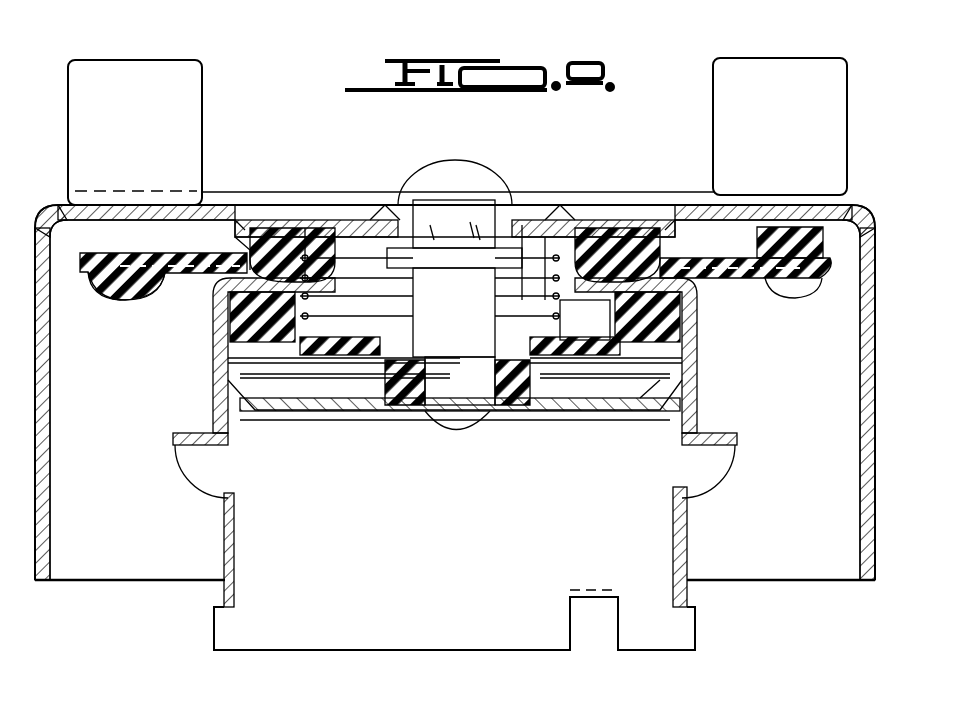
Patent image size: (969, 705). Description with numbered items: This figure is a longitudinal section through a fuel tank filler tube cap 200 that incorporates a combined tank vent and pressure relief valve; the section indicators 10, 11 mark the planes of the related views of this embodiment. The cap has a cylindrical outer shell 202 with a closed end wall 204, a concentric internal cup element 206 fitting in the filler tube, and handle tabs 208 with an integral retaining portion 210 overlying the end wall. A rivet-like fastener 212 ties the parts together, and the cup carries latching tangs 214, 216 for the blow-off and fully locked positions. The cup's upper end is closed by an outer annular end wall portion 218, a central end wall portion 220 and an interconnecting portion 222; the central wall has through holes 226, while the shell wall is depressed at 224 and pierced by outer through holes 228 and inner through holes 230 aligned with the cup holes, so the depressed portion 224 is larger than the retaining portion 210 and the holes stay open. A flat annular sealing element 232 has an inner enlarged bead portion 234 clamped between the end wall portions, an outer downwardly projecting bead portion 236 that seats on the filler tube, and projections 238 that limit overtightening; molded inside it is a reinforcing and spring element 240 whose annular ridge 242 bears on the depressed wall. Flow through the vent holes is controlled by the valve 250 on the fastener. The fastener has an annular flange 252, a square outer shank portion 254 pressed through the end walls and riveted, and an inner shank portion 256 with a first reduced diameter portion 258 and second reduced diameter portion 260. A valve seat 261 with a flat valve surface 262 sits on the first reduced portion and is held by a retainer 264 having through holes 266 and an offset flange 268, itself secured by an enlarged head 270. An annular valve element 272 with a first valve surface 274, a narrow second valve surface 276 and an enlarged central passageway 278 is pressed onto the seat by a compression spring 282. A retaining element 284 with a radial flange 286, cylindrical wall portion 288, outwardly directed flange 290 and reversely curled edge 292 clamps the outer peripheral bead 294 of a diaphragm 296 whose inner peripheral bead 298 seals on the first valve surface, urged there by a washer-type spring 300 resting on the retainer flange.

The fuel tank filler tube cap 200 is at (590, 190).
The outer shroud or shell 202 is at (122, 580).
The closed end wall 204 is at (788, 210).
The internal cup element 206 is at (312, 650).
The handle tabs 208 is at (100, 141).
The retaining portion 210 is at (343, 203).
The rivet-like fastener 212 is at (430, 312).
The latching tang 214 is at (603, 597).
The latching tang 216 is at (185, 462).
The outer annular end wall portion 218 is at (705, 232).
The central end wall portion 220 is at (527, 255).
The interconnecting portion 222 is at (618, 225).
The depressed portion 224 is at (290, 228).
The through holes 226 is at (548, 250).
The outer through holes 228 is at (236, 222).
The inner through holes 230 is at (350, 250).
The sealing element 232 is at (705, 270).
The enlarged bead portion 234 is at (312, 245).
The annular bead portion 236 is at (122, 300).
The projection 238 is at (812, 240).
The reinforcing and spring element 240 is at (200, 262).
The annular ridge 242 is at (268, 232).
The valve 250 is at (330, 415).
The annular flange 252 is at (465, 268).
The outer shank portion 254 is at (438, 205).
The inner shank portion 256 is at (438, 195).
The first reduced diameter portion 258 is at (450, 415).
The second reduced diameter portion 260 is at (472, 415).
The valve seat 261 is at (372, 414).
The valve surface 262 is at (492, 385).
The retainer 264 is at (655, 425).
The through holes 266 is at (292, 460).
The offset flange 268 is at (265, 422).
The enlarged head 270 is at (400, 415).
The valve element 272 is at (606, 371).
The first valve surface 274 is at (285, 317).
The second valve surface 276 is at (457, 380).
The central passageway 278 is at (482, 421).
The compression spring 282 is at (356, 287).
The retaining element 284 is at (537, 286).
The radial flange 286 is at (579, 315).
The cylindrical wall portion 288 is at (690, 303).
The radially outwardly directed flange 290 is at (764, 319).
The reversely curled edge 292 is at (697, 388).
The outer peripheral bead 294 is at (230, 326).
The diaphragm 296 is at (245, 405).
The inner peripheral bead 298 is at (344, 371).
The washer-type spring 300 is at (649, 406).
The section line 10 is at (198, 350).
The section line 11 is at (238, 314).